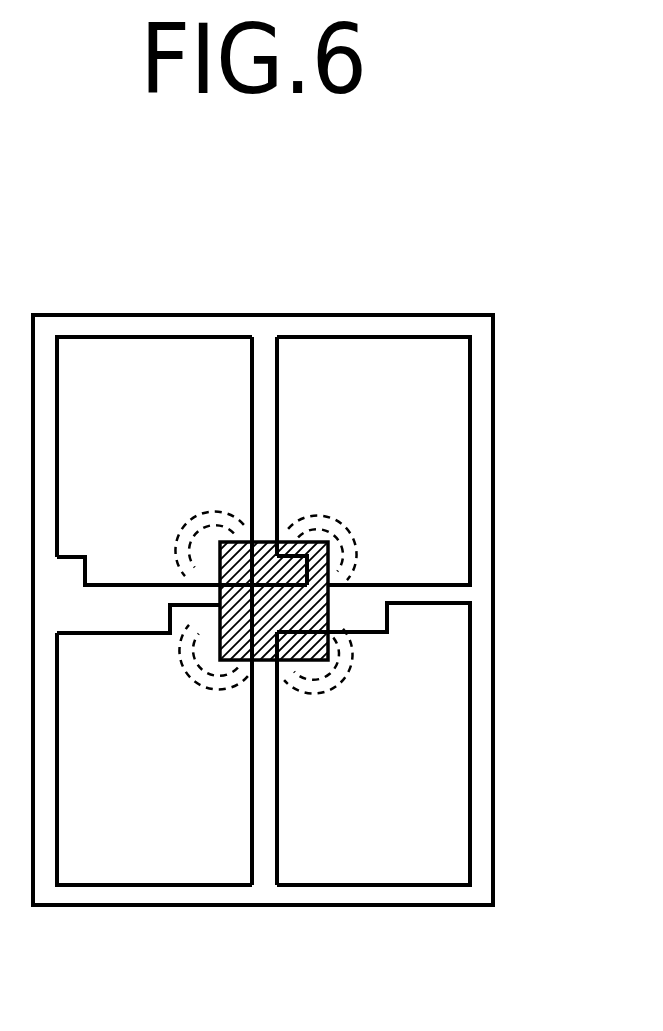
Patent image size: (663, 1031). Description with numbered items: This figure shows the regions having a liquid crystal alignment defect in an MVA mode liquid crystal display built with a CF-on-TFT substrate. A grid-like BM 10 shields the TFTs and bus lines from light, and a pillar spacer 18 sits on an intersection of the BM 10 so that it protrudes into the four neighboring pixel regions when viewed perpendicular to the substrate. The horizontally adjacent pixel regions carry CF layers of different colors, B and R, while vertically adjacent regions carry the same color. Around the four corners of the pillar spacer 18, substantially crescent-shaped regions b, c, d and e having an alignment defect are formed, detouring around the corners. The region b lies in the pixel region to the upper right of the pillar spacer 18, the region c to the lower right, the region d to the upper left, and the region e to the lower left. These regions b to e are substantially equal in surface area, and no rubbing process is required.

The BM 10 is at (263, 360).
The pillar spacer 18 is at (262, 662).
The region having an alignment defect b is at (360, 545).
The region having an alignment defect c is at (352, 652).
The region having an alignment defect d is at (176, 548).
The region having an alignment defect e is at (180, 650).